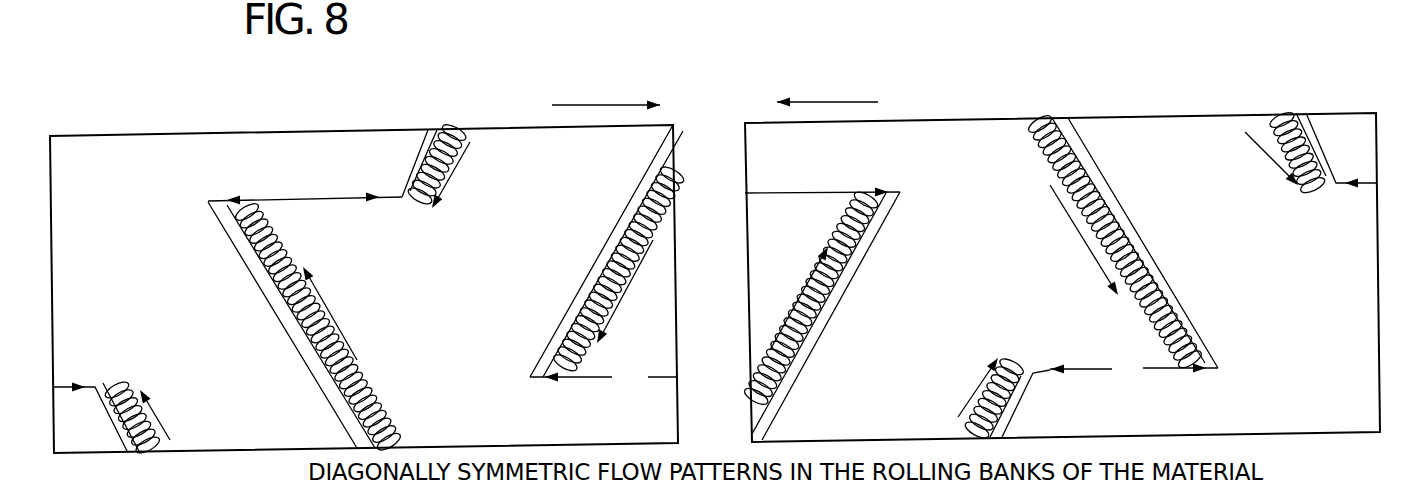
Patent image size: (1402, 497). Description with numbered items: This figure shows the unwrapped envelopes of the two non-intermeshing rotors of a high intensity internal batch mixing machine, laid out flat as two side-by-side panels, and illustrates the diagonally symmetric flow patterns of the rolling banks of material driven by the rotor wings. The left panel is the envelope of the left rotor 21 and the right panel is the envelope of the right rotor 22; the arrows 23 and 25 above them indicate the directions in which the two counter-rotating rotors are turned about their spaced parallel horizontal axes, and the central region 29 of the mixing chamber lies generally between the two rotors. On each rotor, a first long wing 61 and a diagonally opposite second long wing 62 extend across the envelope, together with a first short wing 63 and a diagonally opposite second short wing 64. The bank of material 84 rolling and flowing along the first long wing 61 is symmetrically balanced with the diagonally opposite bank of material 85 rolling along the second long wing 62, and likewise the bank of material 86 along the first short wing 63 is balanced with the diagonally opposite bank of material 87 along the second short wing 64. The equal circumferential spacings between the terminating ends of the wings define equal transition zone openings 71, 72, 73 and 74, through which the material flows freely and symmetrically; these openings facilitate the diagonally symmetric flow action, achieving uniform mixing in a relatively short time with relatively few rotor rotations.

The left rotor 21 is at (310, 119).
The right rotor 22 is at (1227, 107).
The arrow 23 is at (595, 103).
The arrow 25 is at (821, 98).
The central region 29 is at (728, 326).
The first long wing 61 is at (603, 248).
The second long wing 62 is at (293, 335).
The first short wing 63 is at (425, 112).
The second short wing 64 is at (109, 419).
The transition zone opening 71 is at (1123, 385).
The transition zone opening 72 is at (802, 175).
The transition zone opening 73 is at (621, 388).
The transition zone opening 74 is at (326, 186).
The bank of material 84 is at (598, 278).
The bank of material 85 is at (285, 290).
The bank of material 86 is at (441, 129).
The bank of material 87 is at (116, 381).